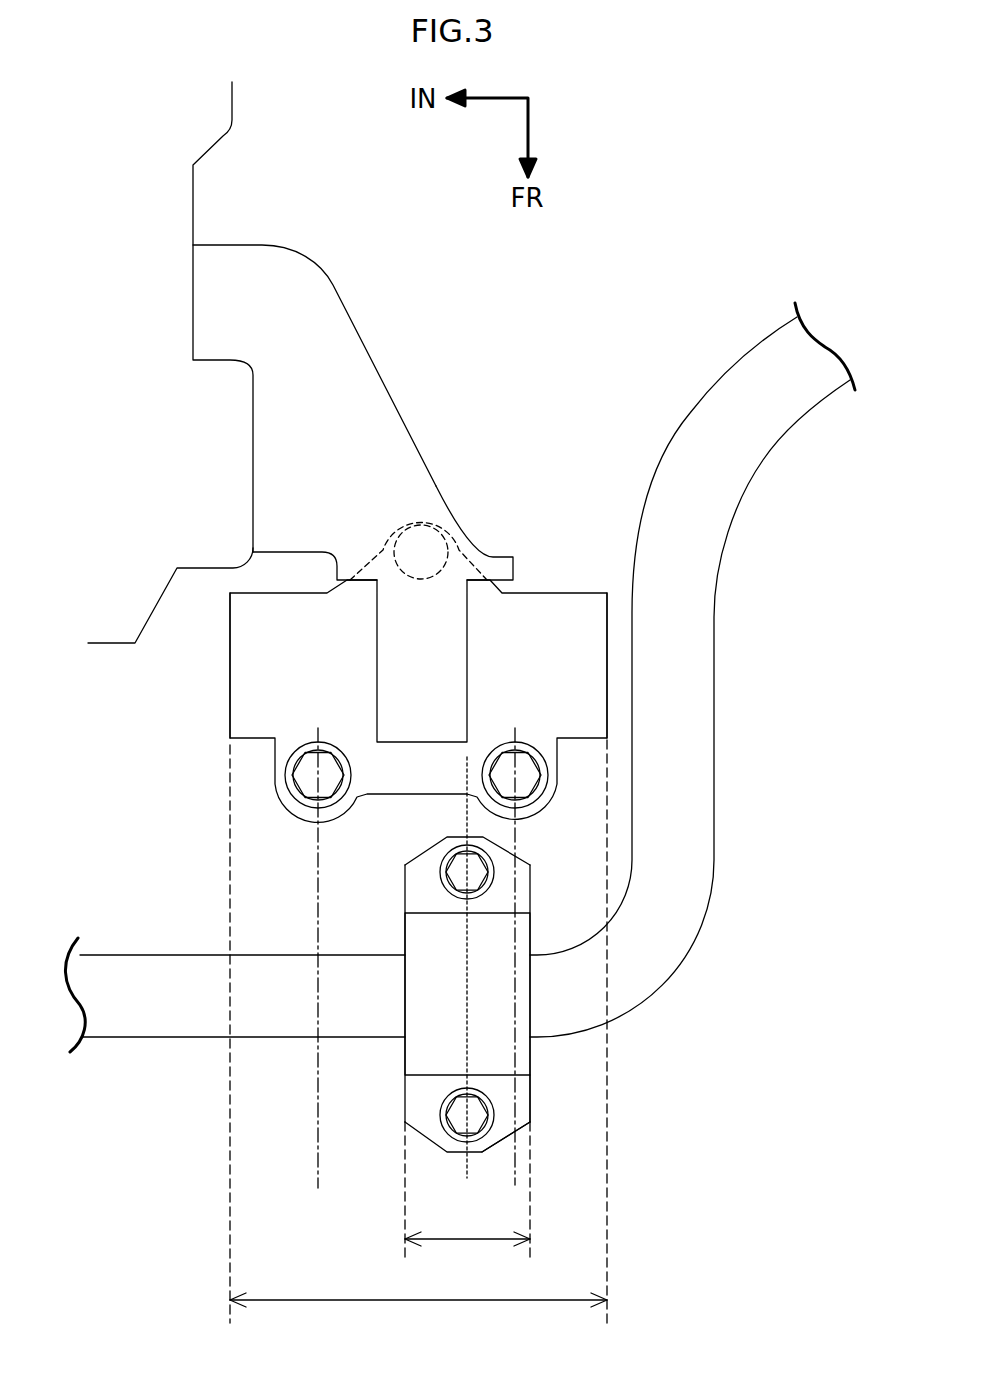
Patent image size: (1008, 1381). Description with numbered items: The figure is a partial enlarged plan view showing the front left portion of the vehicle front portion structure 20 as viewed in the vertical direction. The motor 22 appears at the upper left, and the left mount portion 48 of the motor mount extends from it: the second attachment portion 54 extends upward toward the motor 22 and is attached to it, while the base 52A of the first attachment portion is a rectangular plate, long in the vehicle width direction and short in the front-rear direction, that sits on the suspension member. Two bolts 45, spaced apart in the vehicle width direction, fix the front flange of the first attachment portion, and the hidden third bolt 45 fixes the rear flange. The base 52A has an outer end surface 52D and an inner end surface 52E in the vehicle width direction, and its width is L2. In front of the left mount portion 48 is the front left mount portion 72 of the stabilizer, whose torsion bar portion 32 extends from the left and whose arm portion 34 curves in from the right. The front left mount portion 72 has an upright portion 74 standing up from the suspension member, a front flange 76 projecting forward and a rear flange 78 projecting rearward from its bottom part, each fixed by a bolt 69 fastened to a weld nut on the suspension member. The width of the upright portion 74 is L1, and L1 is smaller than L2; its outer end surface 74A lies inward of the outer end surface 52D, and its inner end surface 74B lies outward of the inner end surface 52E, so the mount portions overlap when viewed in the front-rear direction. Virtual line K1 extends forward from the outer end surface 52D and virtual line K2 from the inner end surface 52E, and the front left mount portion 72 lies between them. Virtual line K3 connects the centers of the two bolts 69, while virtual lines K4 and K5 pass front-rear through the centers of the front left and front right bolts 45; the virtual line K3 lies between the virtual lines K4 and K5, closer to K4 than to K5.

The vehicle front portion structure 20 is at (615, 287).
The motor 22 is at (195, 200).
The torsion bar portion 32 is at (123, 1022).
The arm portion 34 is at (699, 691).
The bolt 45 is at (402, 532).
The left mount portion 48 is at (443, 463).
The base 52A is at (547, 608).
The outer end surface 52D is at (610, 624).
The inner end surface 52E is at (230, 675).
The second attachment portion 54 is at (372, 360).
The bolt 69 is at (447, 860).
The front left mount portion 72 is at (533, 1115).
The upright portion 74 is at (530, 987).
The outer end surface 74A is at (530, 1055).
The inner end surface 74B is at (403, 1050).
The front flange 76 is at (432, 1125).
The rear flange 78 is at (417, 888).
The virtual line K1 is at (607, 1055).
The virtual line K2 is at (227, 1062).
The virtual line K3 is at (465, 1008).
The virtual line K4 is at (530, 940).
The virtual line K5 is at (315, 920).
The length of upright portion L1 is at (465, 1242).
The length of base L2 is at (422, 1303).